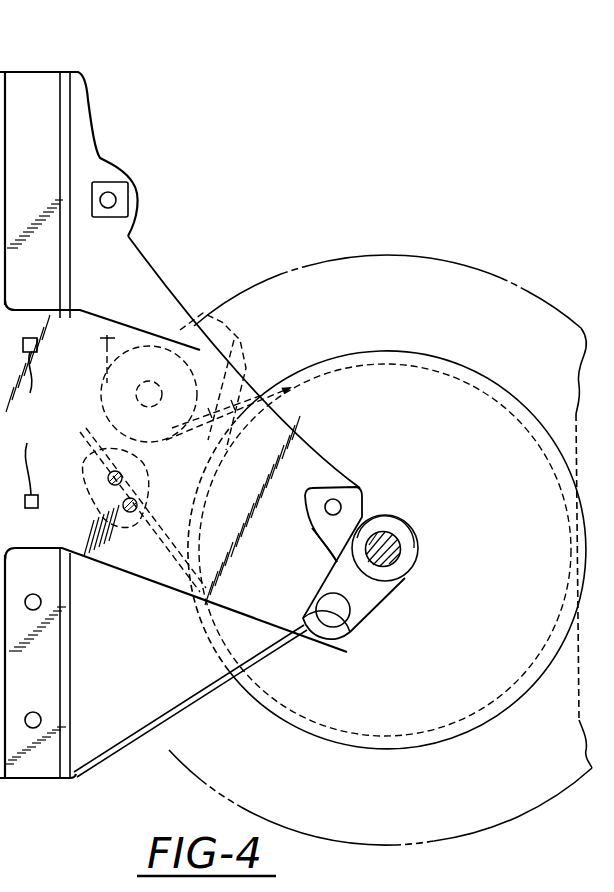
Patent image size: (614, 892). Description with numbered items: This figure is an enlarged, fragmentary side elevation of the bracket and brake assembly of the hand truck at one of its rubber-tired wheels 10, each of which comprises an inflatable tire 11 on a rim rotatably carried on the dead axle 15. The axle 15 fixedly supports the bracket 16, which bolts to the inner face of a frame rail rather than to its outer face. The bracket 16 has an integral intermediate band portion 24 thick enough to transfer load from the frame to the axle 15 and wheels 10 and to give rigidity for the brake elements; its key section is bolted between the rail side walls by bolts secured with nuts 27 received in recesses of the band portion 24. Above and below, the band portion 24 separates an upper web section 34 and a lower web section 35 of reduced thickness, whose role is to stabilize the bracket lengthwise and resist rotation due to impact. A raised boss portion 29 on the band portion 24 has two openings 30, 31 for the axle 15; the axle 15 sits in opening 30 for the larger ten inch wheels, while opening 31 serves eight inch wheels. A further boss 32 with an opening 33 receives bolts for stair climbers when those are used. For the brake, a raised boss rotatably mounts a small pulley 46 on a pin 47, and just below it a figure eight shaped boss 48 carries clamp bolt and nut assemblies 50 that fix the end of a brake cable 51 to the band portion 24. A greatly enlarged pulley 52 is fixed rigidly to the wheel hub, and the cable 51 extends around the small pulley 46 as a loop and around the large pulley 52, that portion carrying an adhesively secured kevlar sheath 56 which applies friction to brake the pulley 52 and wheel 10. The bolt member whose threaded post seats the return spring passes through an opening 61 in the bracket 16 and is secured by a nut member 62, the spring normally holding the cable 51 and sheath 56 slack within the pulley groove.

The wheel 10 is at (203, 792).
The inflatable tire 11 is at (368, 262).
The dead axle 15 is at (400, 565).
The bracket 16 is at (176, 287).
The intermediate band portion 24 is at (270, 410).
The nut 27 is at (28, 375).
The raised boss portion 29 is at (355, 583).
The opening 30 is at (383, 530).
The opening 31 is at (342, 630).
The boss 32 is at (333, 522).
The opening 33 is at (322, 505).
The upper web section 34 is at (100, 160).
The lower web section 35 is at (112, 726).
The pulley 46 is at (135, 502).
The pin 47 is at (103, 387).
The figure eight shaped boss 48 is at (90, 458).
The clamp bolt and nut assembly 50 is at (123, 504).
The brake cable 51 is at (177, 381).
The pulley 52 is at (441, 695).
The kevlar sheath 56 is at (260, 388).
The opening 61 is at (133, 197).
The nut member 62 is at (101, 218).